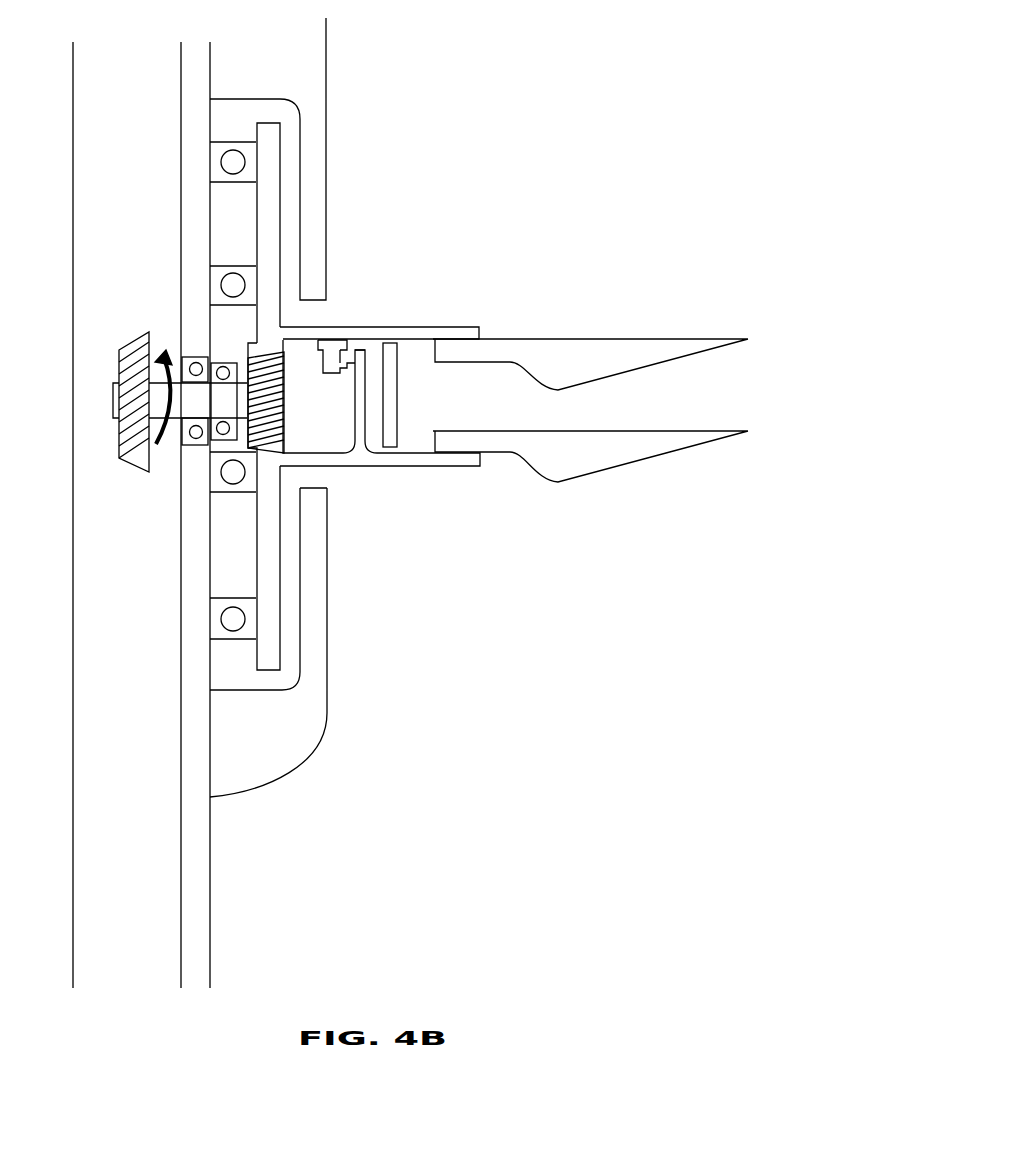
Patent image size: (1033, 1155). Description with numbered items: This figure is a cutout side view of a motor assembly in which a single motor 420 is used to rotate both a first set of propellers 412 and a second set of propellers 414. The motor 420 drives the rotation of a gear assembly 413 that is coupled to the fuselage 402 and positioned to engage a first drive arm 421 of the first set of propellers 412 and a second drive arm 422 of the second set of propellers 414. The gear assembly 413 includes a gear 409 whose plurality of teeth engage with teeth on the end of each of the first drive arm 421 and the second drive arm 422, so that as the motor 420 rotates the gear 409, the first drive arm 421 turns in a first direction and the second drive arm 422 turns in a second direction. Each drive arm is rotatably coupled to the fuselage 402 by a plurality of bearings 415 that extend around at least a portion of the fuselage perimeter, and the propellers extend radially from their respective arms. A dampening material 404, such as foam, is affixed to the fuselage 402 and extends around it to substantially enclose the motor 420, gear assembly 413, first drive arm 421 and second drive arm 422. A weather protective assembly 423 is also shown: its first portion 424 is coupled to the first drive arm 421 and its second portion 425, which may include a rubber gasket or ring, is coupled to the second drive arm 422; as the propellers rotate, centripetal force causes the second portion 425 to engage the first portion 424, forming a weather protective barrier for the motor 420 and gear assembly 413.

The fuselage 402 is at (200, 853).
The dampening material 404 is at (317, 83).
The gear 409 is at (287, 368).
The first set of propellers 412 is at (565, 475).
The gear assembly 413 is at (216, 477).
The second set of propellers 414 is at (588, 345).
The bearings 415 is at (215, 158).
The motor 420 is at (134, 347).
The first drive arm 421 is at (272, 500).
The second drive arm 422 is at (271, 210).
The weather protective assembly 423 is at (355, 341).
The first portion of the weather protective assembly 424 is at (362, 410).
The second portion of the weather protective assembly 425 is at (335, 345).